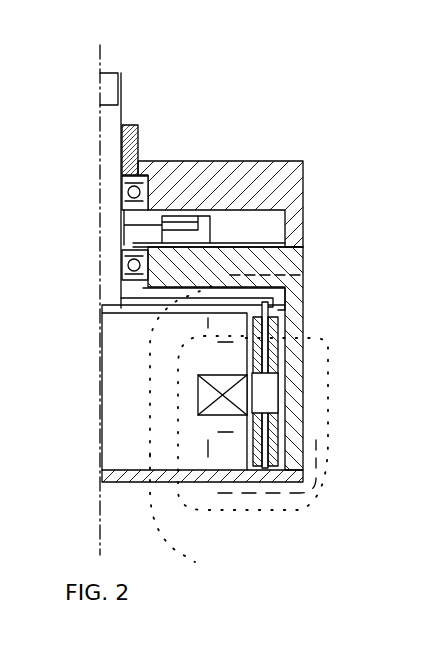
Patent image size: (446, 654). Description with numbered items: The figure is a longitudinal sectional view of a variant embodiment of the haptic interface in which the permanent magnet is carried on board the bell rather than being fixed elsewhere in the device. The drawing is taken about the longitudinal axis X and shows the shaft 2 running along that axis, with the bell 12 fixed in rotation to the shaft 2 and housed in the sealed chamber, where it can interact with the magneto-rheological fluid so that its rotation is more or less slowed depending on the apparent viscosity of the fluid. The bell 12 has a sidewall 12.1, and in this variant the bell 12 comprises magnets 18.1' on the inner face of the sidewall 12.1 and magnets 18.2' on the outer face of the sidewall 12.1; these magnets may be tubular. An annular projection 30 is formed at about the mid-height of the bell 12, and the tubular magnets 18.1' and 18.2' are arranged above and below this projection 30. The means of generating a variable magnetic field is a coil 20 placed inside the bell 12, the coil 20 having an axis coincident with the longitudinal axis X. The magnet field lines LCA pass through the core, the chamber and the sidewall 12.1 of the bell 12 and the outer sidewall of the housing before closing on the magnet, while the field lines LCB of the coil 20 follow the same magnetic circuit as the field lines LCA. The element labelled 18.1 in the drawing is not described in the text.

The shaft 2 is at (120, 118).
The bell 12 is at (246, 268).
The sidewall of the bell 12.1 is at (268, 336).
The bolt 18.1 is at (329, 349).
The magnets on the inner face 18.1' is at (281, 439).
The magnets on the outer face 18.2' is at (327, 424).
The coil 20 is at (205, 415).
The annular projection 30 is at (265, 381).
The magnet field lines LCA is at (295, 275).
The field lines of the coil LCB is at (208, 507).
The longitudinal axis X is at (98, 58).